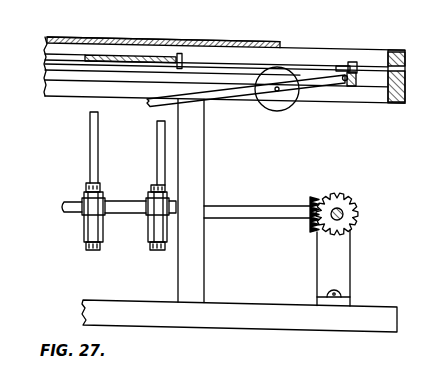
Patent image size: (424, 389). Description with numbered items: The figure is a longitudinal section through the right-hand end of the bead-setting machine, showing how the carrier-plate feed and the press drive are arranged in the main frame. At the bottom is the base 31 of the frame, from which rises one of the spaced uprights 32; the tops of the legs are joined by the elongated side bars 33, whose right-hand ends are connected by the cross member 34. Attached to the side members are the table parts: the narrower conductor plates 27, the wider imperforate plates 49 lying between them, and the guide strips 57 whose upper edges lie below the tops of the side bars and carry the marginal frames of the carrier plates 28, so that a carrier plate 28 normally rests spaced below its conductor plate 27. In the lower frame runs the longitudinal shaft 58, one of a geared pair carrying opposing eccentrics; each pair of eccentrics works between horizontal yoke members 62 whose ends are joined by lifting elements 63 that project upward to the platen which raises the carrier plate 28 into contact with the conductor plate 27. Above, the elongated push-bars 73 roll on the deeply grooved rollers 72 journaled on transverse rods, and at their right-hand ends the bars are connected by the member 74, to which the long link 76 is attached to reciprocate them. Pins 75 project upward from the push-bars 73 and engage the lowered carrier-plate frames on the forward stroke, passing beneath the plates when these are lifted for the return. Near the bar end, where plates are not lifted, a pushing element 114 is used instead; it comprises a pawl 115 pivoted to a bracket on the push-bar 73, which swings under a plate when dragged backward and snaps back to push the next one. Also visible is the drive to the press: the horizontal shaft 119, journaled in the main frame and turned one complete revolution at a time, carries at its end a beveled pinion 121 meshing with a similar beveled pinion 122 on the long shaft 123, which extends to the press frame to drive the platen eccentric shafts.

The conductor plate 27 is at (127, 38).
The carrier plate 28 is at (158, 53).
The base 31 is at (279, 323).
The upright 32 is at (204, 155).
The side bar 33 is at (68, 88).
The cross member 34 is at (394, 52).
The imperforate plate 49 is at (65, 38).
The guide strip 57 is at (45, 60).
The shaft 58 is at (63, 212).
The yoke member 62 is at (83, 243).
The lifting element 63 is at (157, 152).
The roller 72 is at (280, 111).
The push-bar 73 is at (47, 72).
The member 74 is at (351, 87).
The pin 75 is at (216, 38).
The long link 76 is at (246, 104).
The pushing element 114 is at (327, 57).
The pawl 115 is at (340, 62).
The horizontal shaft 119 is at (340, 211).
The beveled pinion 121 is at (355, 213).
The beveled pinion 122 is at (314, 197).
The long shaft 123 is at (269, 212).